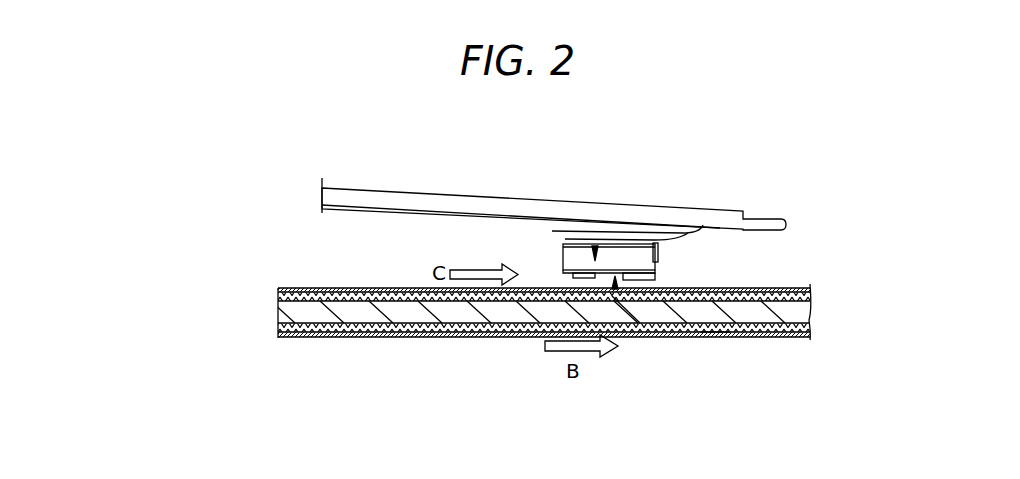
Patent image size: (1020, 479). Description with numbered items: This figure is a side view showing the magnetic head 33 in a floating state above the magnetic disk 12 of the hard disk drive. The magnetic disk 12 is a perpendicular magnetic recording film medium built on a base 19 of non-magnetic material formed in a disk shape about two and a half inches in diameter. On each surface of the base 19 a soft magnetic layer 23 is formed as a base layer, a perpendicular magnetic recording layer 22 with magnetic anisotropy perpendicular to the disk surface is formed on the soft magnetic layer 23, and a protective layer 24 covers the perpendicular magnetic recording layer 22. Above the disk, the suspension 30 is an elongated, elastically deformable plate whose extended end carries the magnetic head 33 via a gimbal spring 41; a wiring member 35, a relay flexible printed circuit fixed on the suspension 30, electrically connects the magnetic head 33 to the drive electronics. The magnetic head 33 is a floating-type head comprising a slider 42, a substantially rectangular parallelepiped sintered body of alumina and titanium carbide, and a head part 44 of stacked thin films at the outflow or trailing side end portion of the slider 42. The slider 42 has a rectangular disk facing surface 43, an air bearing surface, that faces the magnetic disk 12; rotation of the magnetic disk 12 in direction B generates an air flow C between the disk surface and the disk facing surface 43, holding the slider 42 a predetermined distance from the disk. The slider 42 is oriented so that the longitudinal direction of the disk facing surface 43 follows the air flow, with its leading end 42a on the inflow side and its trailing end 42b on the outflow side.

The magnetic disk 12 is at (459, 348).
The base 19 is at (378, 320).
The perpendicular magnetic recording layer 22 is at (345, 293).
The soft magnetic layer 23 is at (278, 300).
The protective layer 24 is at (302, 289).
The suspension 30 is at (421, 195).
The magnetic head 33 is at (593, 245).
The wiring member 35 is at (408, 218).
The gimbal spring 41 is at (558, 236).
The slider 42 is at (638, 244).
The leading end 42a is at (563, 258).
The trailing end 42b is at (655, 268).
The disk facing surface 43 is at (612, 296).
The head part 44 is at (712, 332).